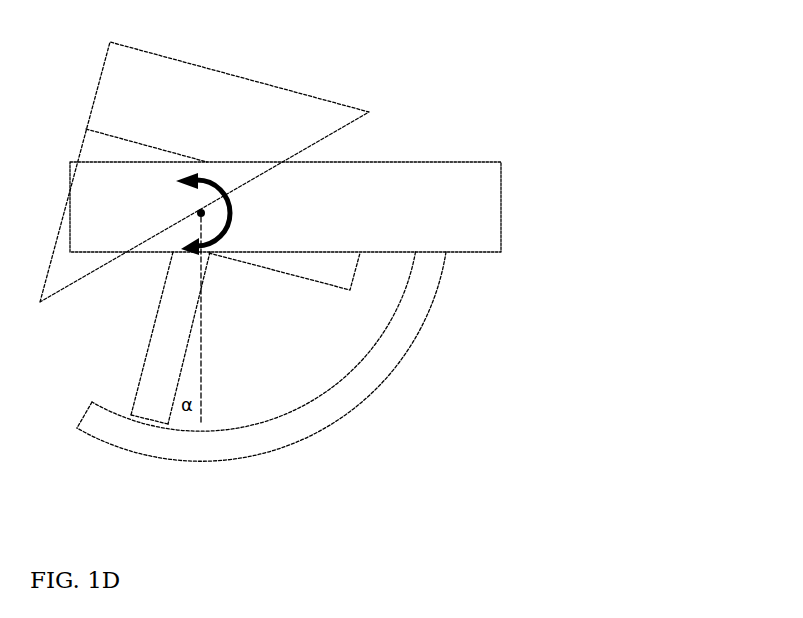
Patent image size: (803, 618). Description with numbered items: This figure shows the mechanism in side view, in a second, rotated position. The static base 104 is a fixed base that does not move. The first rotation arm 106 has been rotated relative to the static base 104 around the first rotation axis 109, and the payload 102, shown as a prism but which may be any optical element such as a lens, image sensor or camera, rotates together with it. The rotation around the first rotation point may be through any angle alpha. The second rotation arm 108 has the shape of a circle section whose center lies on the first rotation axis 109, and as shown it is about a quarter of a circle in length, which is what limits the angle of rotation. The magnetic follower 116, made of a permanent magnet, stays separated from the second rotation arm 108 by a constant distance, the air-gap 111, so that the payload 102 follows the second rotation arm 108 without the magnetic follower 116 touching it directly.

The payload 102 is at (233, 112).
The static base 104 is at (473, 197).
The first rotation arm 106 is at (327, 265).
The second rotation arm 108 is at (367, 392).
The first rotation axis 109 is at (312, 167).
The air-gap 111 is at (143, 423).
The magnetic follower 116 is at (175, 308).